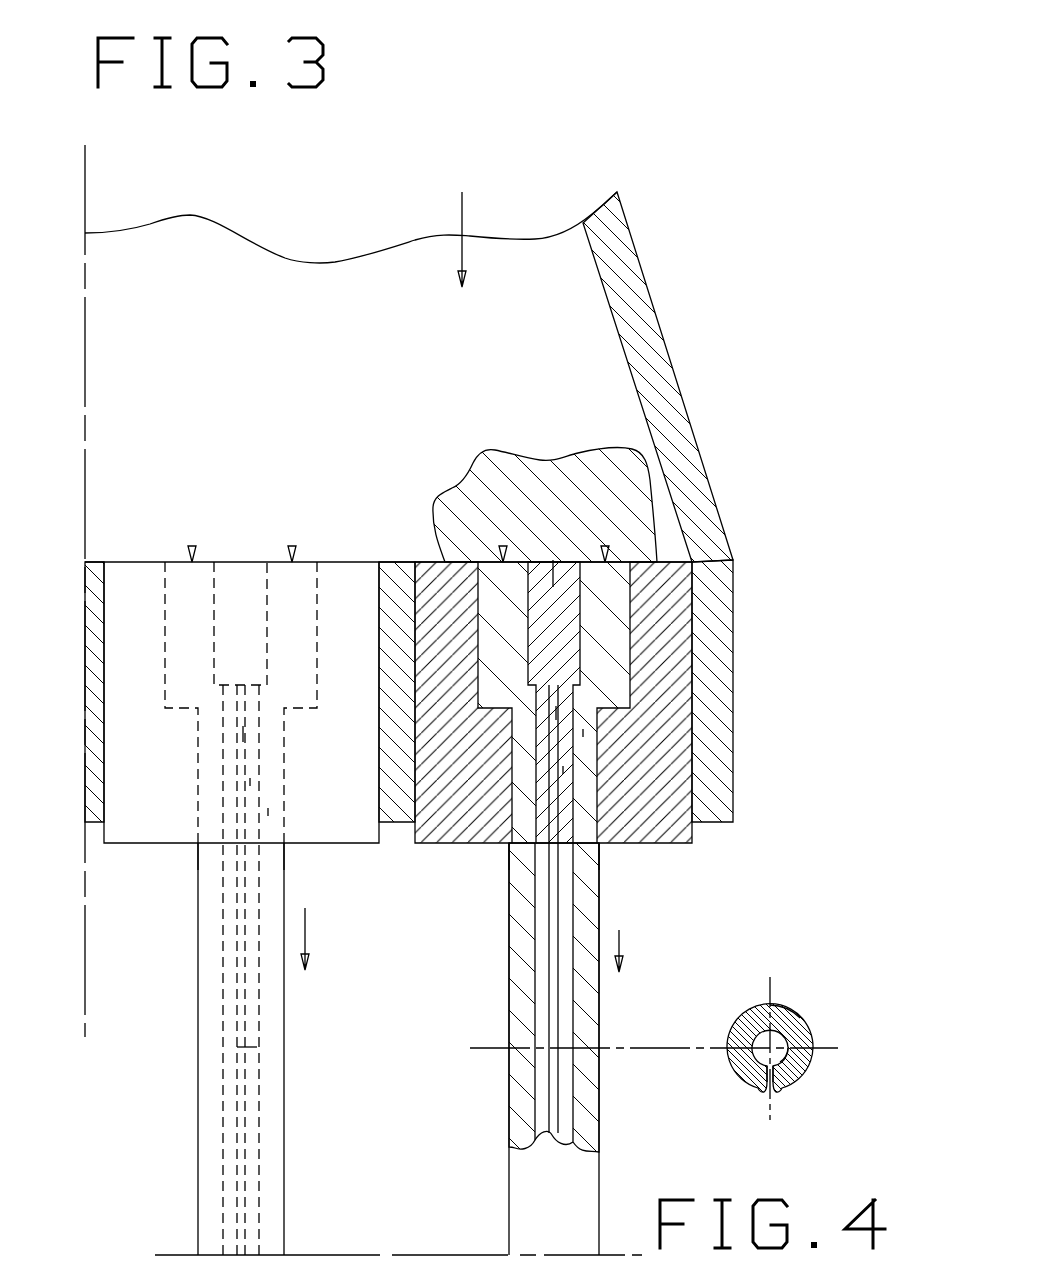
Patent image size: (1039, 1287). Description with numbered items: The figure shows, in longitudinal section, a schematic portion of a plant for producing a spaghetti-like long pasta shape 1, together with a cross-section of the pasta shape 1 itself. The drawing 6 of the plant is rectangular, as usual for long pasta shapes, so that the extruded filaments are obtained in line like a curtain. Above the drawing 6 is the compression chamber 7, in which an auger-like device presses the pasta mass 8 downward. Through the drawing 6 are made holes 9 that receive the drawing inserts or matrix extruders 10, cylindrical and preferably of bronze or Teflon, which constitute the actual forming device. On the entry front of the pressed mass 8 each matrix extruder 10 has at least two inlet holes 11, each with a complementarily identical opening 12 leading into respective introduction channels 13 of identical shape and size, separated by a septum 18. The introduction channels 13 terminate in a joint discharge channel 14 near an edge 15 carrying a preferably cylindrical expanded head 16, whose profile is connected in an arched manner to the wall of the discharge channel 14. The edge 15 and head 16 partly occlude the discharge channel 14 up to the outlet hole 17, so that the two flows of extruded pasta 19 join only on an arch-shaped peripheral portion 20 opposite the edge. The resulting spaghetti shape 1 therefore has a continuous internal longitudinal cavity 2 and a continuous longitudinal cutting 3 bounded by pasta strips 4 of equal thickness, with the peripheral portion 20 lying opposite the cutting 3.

In FIG. 3, the spaghetti-like long pasta shape 1 is at (613, 1015).
In FIG. 4, the spaghetti-like long pasta shape 1 is at (807, 1013).
In FIG. 3, the continuous internal longitudinal cavity 2 is at (248, 1107).
In FIG. 4, the continuous internal longitudinal cavity 2 is at (800, 1078).
In FIG. 3, the continuous longitudinal cutting 3 is at (238, 1047).
In FIG. 4, the pasta strips 4 is at (760, 1088).
In FIG. 3, the drawing 6 is at (97, 620).
In FIG. 3, the compression chamber 7 is at (592, 266).
In FIG. 3, the pasta mass 8 is at (400, 330).
In FIG. 3, the drawing holes 9 is at (105, 688).
In FIG. 3, the matrix extruders 10 is at (175, 824).
In FIG. 3, the inlet holes 11 is at (192, 560).
In FIG. 3, the opening for introduction 12 is at (187, 613).
In FIG. 3, the introduction channels 13 is at (140, 578).
In FIG. 3, the discharge channel 14 is at (268, 812).
In FIG. 3, the edge 15 is at (237, 735).
In FIG. 3, the expanded head 16 is at (250, 782).
In FIG. 3, the outlet hole 17 is at (197, 843).
In FIG. 3, the septum 18 is at (242, 595).
In FIG. 3, the flows of extruded pasta 19 is at (213, 1210).
In FIG. 4, the peripheral portion 20 is at (775, 1012).